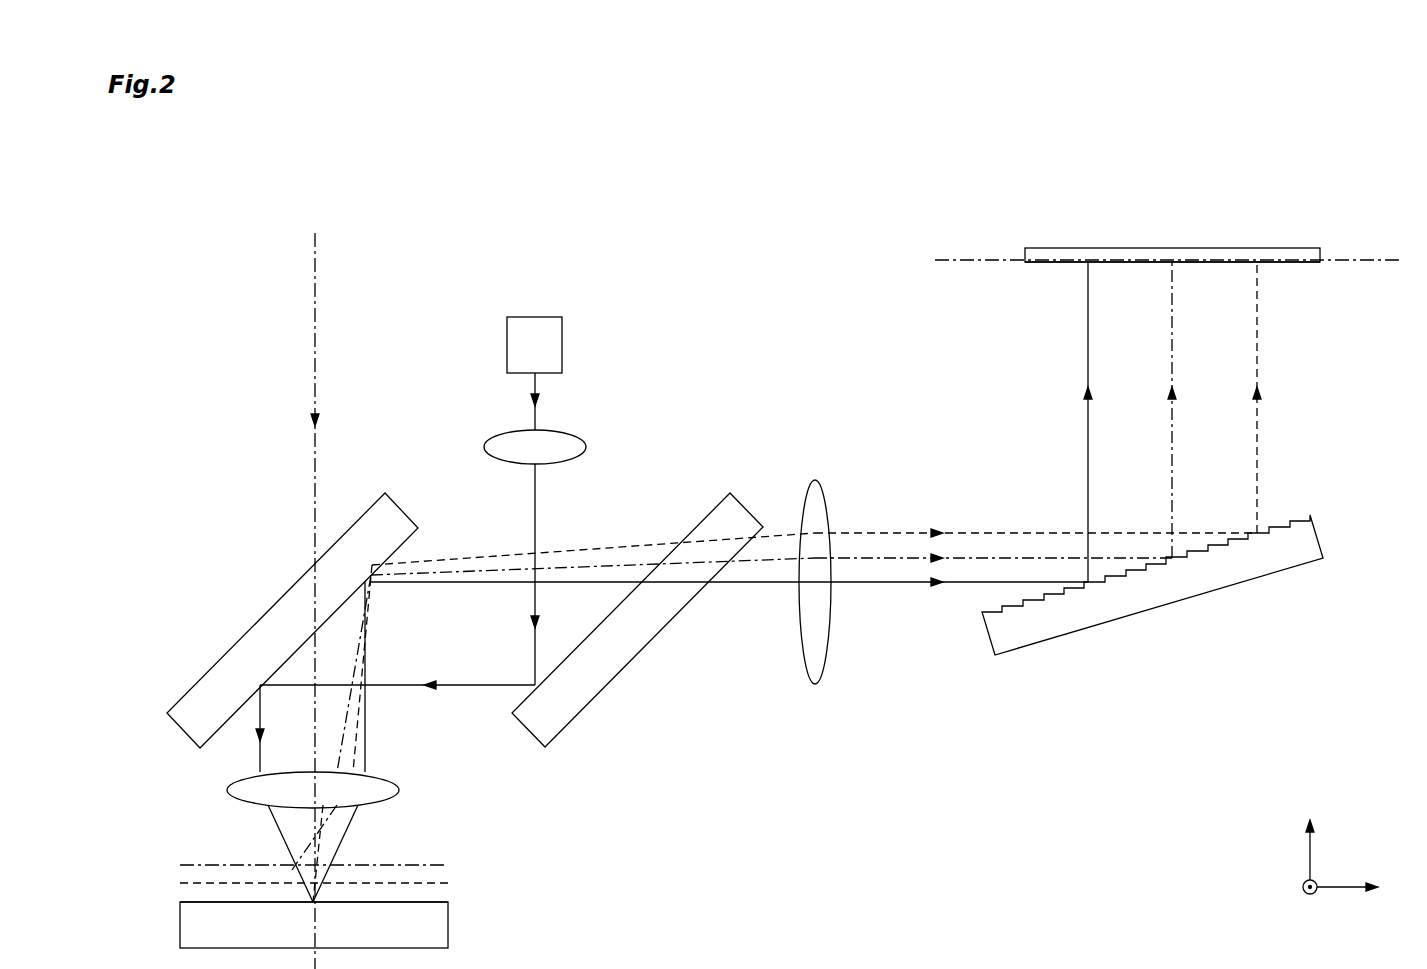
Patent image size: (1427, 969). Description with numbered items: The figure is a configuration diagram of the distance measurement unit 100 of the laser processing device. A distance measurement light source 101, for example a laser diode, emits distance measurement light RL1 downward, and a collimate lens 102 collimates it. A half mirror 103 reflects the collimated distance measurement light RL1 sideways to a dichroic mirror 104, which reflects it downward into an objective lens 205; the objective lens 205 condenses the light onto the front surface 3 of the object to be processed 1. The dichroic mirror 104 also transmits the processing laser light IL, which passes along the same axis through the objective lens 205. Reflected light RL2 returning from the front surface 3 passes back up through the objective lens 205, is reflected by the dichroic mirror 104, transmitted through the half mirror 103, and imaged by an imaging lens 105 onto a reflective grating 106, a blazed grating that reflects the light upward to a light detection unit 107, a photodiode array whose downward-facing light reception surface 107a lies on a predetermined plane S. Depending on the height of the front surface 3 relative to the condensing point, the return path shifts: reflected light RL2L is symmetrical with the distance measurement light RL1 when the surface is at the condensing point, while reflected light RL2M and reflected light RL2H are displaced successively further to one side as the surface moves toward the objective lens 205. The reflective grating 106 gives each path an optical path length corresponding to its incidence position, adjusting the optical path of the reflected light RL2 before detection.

The distance measurement unit 100 is at (315, 172).
The distance measurement light source 101 is at (564, 345).
The collimate lens 102 is at (585, 447).
The half mirror 103 is at (642, 650).
The dichroic mirror 104 is at (240, 638).
The imaging lens 105 is at (815, 685).
The reflective grating 106 is at (1175, 603).
The light detection unit 107 is at (1172, 248).
The light reception surface 107a is at (1297, 263).
The objective lens 205 is at (235, 790).
The object to be processed 1 is at (180, 930).
The front surface 3 is at (190, 865).
The laser light IL is at (313, 402).
The distance measurement light RL1 is at (540, 430).
The reflected light RL2 is at (776, 582).
The reflected light RL2H is at (897, 533).
The reflected light RL2M is at (1005, 558).
The reflected light RL2L is at (902, 582).
The predetermined plane S is at (993, 262).